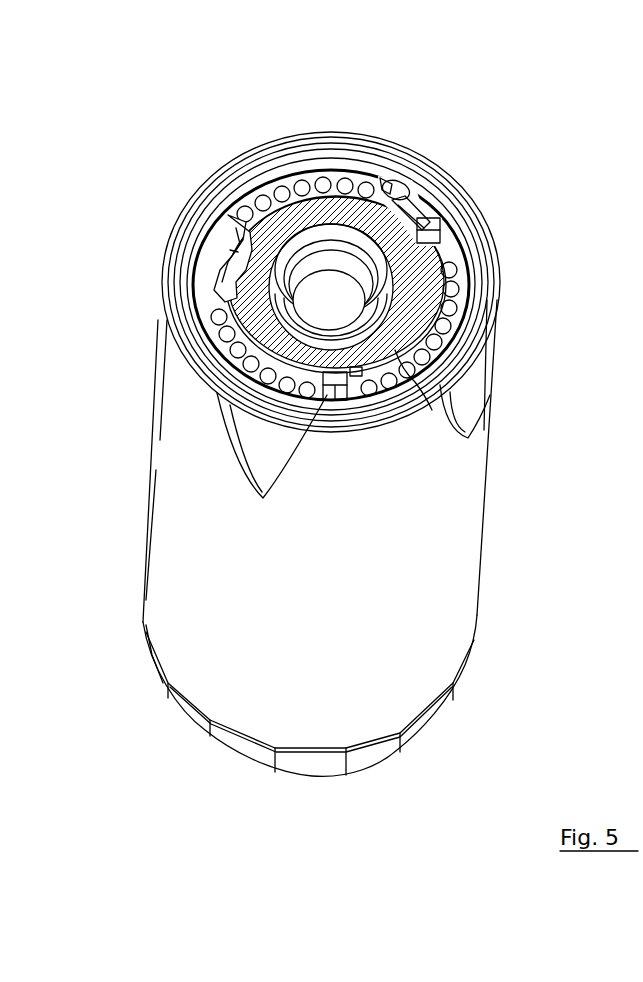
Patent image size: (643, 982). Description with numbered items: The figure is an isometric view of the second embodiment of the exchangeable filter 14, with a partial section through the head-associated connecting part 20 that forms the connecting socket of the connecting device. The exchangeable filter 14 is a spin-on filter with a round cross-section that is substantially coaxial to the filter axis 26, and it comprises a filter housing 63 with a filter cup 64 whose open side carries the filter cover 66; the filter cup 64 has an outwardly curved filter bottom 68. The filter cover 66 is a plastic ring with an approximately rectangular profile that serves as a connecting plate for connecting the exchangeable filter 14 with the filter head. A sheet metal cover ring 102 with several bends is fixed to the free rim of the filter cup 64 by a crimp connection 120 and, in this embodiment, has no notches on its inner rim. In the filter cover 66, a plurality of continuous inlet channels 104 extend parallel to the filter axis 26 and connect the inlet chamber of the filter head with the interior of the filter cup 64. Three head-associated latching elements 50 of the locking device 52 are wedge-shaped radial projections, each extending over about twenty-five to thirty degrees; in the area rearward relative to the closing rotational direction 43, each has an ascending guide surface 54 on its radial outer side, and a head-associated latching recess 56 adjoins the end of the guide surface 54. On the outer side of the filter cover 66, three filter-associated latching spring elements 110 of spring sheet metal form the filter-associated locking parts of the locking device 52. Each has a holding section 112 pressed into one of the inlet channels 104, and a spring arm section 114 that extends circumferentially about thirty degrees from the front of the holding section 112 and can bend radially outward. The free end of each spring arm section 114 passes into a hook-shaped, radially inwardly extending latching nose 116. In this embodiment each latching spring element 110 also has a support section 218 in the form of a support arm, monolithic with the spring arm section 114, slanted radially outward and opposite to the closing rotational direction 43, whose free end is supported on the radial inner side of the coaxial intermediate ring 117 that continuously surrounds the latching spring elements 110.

The exchangeable filter 14 is at (187, 76).
The head-associated connecting part 20 is at (308, 184).
The filter axis 26 is at (331, 335).
The closing rotational direction 43 is at (505, 128).
The head-associated latching element 50 is at (412, 186).
The locking device 52 is at (384, 192).
The guide surface 54 is at (410, 192).
The head-associated latching recess 56 is at (378, 178).
The filter housing 63 is at (182, 553).
The filter cup 64 is at (198, 637).
The filter cover 66 is at (265, 190).
The filter bottom 68 is at (412, 730).
The sheet metal cover ring 102 is at (205, 196).
The inlet channel 104 is at (215, 330).
The latching spring element 110 is at (373, 396).
The holding section 112 is at (327, 400).
The spring arm section 114 is at (357, 388).
The latching nose 116 is at (397, 352).
The intermediate ring 117 is at (460, 268).
The crimp connection 120 is at (175, 240).
The support section 218 is at (398, 355).